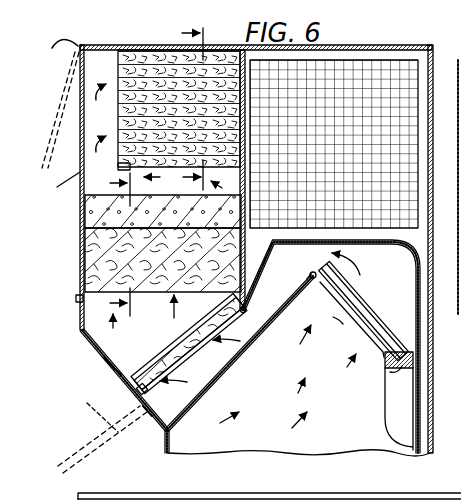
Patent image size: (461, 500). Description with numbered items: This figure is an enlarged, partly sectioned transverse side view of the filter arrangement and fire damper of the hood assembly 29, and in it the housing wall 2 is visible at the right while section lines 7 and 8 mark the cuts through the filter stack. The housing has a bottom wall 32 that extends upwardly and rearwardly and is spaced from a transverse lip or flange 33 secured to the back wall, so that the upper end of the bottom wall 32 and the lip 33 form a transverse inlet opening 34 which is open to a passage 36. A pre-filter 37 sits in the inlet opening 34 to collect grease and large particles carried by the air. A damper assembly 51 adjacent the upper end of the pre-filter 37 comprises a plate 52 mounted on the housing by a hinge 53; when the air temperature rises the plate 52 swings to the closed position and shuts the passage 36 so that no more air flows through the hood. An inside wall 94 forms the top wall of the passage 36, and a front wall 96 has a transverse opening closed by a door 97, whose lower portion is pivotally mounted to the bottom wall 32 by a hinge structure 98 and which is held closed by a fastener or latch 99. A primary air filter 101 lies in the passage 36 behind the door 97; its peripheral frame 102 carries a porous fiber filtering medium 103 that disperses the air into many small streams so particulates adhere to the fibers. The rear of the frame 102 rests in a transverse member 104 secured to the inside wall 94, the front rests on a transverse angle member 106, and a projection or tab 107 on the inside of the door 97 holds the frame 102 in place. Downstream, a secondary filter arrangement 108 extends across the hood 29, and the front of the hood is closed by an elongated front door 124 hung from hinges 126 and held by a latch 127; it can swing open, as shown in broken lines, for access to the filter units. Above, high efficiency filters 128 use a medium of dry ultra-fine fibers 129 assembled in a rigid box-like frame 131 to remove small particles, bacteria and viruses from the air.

The housing wall 2 is at (437, 425).
The section line 7- 7 is at (111, 244).
The section line 8- 8 is at (183, 109).
The hood assembly 29 is at (438, 46).
The bottom wall 32 is at (218, 378).
The transverse lip or flange 33 is at (391, 374).
The transverse inlet opening 34 is at (337, 326).
The passage 36 is at (364, 310).
The pre-filter 37 is at (372, 301).
The damper assembly 51 is at (309, 292).
The plate 52 is at (292, 252).
The hinge 53 is at (295, 279).
The inside wall 94 is at (258, 263).
The front wall 96 is at (165, 429).
The door 97 is at (113, 370).
The hinge structure 98 is at (147, 412).
The fastener or latch 99 is at (82, 337).
The primary air filter 101 is at (167, 334).
The peripheral frame 102 is at (150, 355).
The filtering medium 103 is at (177, 348).
The transverse member 104 is at (234, 309).
The transverse angle member 106 is at (144, 390).
The projection or tab 107 is at (112, 362).
The secondary filter arrangement 108 is at (84, 260).
The front door 124 is at (74, 203).
The hinges 126 is at (54, 113).
The latch 127 is at (76, 299).
The high efficiency filters 128 is at (157, 54).
The ultra-fine fibers 129 is at (388, 499).
The box-like frame 131 is at (200, 493).